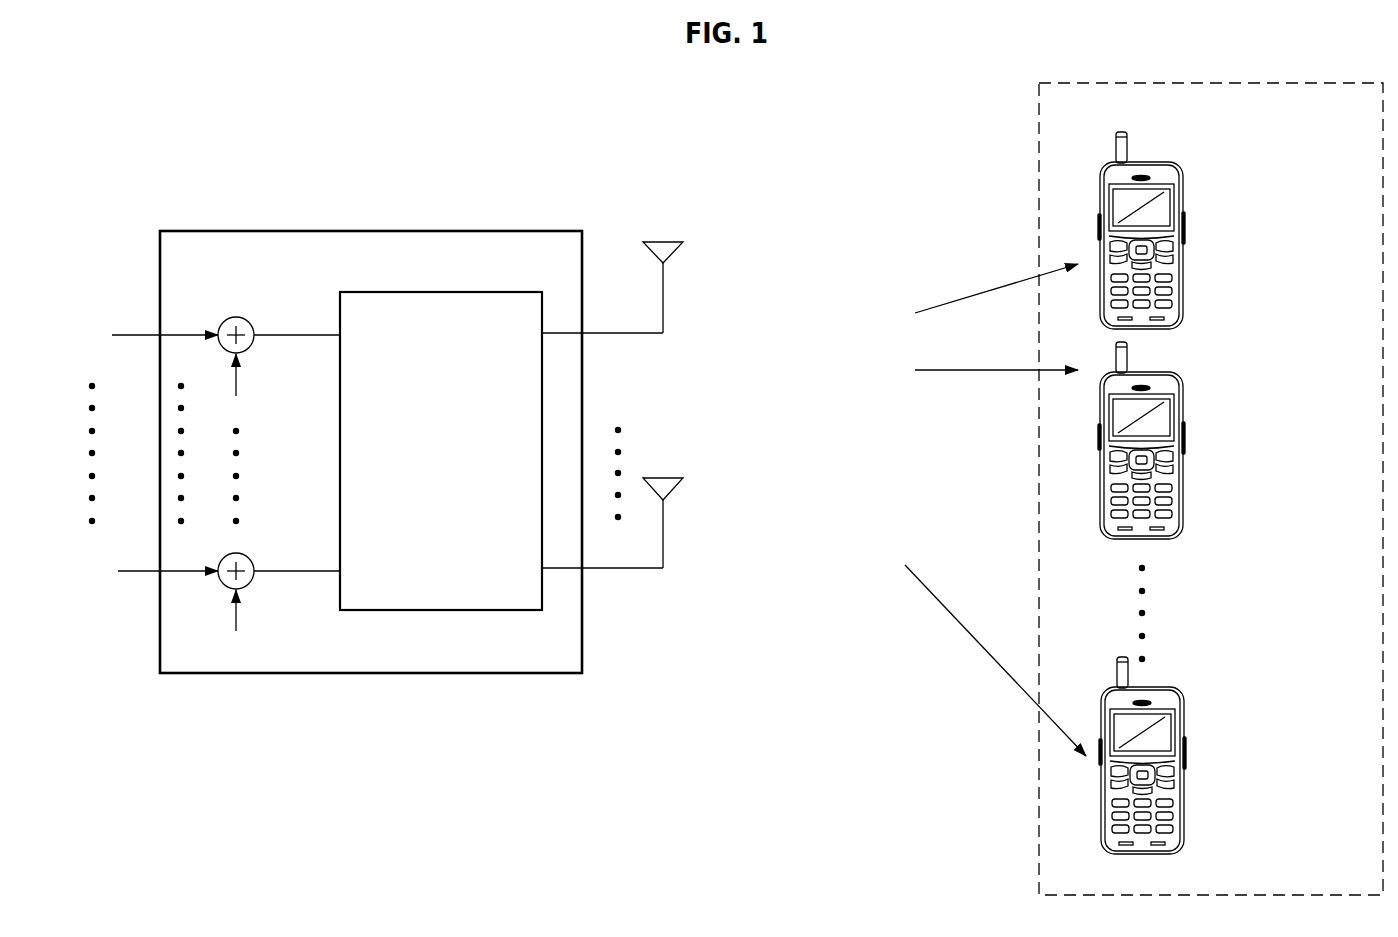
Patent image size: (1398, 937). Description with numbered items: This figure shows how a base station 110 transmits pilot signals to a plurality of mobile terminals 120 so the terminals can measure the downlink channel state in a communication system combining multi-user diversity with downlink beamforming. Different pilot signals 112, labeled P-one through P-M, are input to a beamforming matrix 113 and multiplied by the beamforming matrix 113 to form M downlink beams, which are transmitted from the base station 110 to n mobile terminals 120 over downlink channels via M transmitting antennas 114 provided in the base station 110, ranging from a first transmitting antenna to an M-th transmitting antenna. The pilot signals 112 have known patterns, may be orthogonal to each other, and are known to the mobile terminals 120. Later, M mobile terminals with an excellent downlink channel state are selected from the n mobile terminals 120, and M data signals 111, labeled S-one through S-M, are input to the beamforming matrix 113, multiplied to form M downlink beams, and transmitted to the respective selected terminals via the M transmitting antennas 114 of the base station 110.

The base station 110 is at (178, 675).
The data signals 111 is at (95, 597).
The pilot signals 112 is at (255, 653).
The beamforming matrix 113 is at (438, 612).
The transmitting antennas 114 is at (748, 583).
The mobile terminals 120 is at (1039, 863).